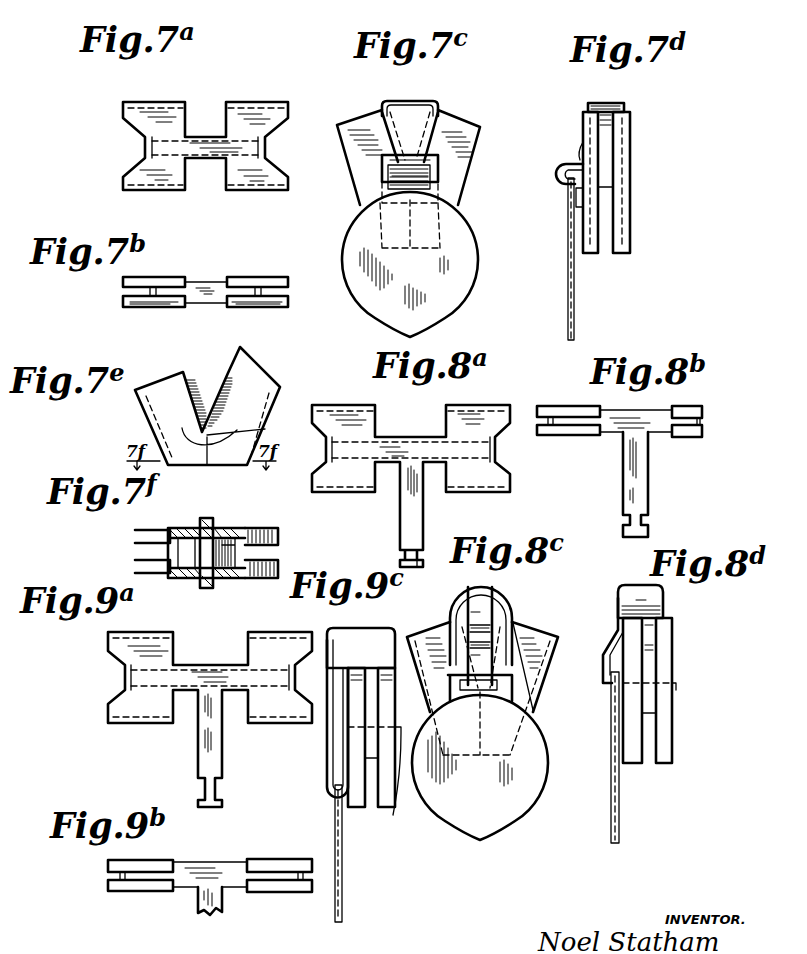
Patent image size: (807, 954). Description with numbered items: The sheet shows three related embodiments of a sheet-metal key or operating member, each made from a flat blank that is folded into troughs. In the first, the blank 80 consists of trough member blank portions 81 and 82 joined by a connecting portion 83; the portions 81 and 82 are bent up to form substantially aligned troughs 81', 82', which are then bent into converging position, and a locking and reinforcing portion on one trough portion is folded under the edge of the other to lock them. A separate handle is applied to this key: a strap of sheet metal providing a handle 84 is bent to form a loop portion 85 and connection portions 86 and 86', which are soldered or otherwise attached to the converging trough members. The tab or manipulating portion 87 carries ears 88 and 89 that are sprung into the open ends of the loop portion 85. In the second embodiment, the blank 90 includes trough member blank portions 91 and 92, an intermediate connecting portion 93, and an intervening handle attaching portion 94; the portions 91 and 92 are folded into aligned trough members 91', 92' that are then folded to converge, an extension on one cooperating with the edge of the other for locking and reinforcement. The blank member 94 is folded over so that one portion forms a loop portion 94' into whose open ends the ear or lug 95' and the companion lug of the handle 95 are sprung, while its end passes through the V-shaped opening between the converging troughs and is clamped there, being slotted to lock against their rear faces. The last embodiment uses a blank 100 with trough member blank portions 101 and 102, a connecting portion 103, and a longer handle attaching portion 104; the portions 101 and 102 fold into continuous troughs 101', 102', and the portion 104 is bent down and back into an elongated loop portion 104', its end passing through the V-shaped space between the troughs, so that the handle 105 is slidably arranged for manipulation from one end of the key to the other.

In FIG. 7A, the blank 80 is at (263, 102).
In FIG. 7A, the trough member blank portion 81 is at (154, 209).
In FIG. 7A, the trough member blank portion 82 is at (257, 209).
In FIG. 7A, the connecting portion 83 is at (196, 135).
In FIG. 7B, the connecting portion 83 is at (205, 305).
In FIG. 7B, the trough 81' is at (151, 311).
In FIG. 7B, the trough 82' is at (262, 309).
In FIG. 7D, the handle 84 is at (570, 164).
In FIG. 7D, the loop portion 85 is at (560, 188).
In FIG. 7D, the connection portion 86 is at (564, 142).
In FIG. 7D, the connection portion 86' is at (554, 235).
In FIG. 7C, the tab or manipulating portion 87 is at (448, 280).
In FIG. 7D, the tab or manipulating portion 87 is at (574, 298).
In FIG. 7C, the ear 88 is at (438, 178).
In FIG. 7C, the ear 89 is at (383, 178).
In FIG. 8A, the blank 90 is at (492, 494).
In FIG. 8A, the trough member blank portion 91 is at (343, 505).
In FIG. 8A, the trough member blank portion 92 is at (495, 484).
In FIG. 8A, the trough member 91' is at (308, 455).
In FIG. 8B, the trough member 91' is at (568, 408).
In FIG. 8A, the trough member 92' is at (461, 449).
In FIG. 8B, the trough member 92' is at (707, 415).
In FIG. 8A, the intermediate connecting portion 93 is at (397, 448).
In FIG. 8B, the intermediate connecting portion 93 is at (630, 416).
In FIG. 8A, the handle attaching portion 94 is at (393, 506).
In FIG. 8B, the handle attaching portion 94 is at (622, 484).
In FIG. 8A, the loop portion 94' is at (430, 544).
In FIG. 8D, the loop portion 94' is at (595, 656).
In FIG. 8C, the handle 95 is at (482, 734).
In FIG. 8D, the handle 95 is at (622, 714).
In FIG. 8C, the ear or lug 95' is at (460, 638).
In FIG. 9A, the blank 100 is at (191, 706).
In FIG. 9A, the trough member blank portion 101 is at (131, 742).
In FIG. 9A, the trough member blank portion 102 is at (280, 741).
In FIG. 9B, the trough 101' is at (151, 866).
In FIG. 9B, the trough 102' is at (287, 866).
In FIG. 9A, the connecting portion 103 is at (228, 657).
In FIG. 9B, the connecting portion 103 is at (198, 862).
In FIG. 9A, the handle attaching portion 104 is at (235, 738).
In FIG. 9B, the handle attaching portion 104 is at (186, 910).
In FIG. 9C, the elongated loop portion 104' is at (315, 723).
In FIG. 9C, the handle or operating device 105 is at (343, 880).